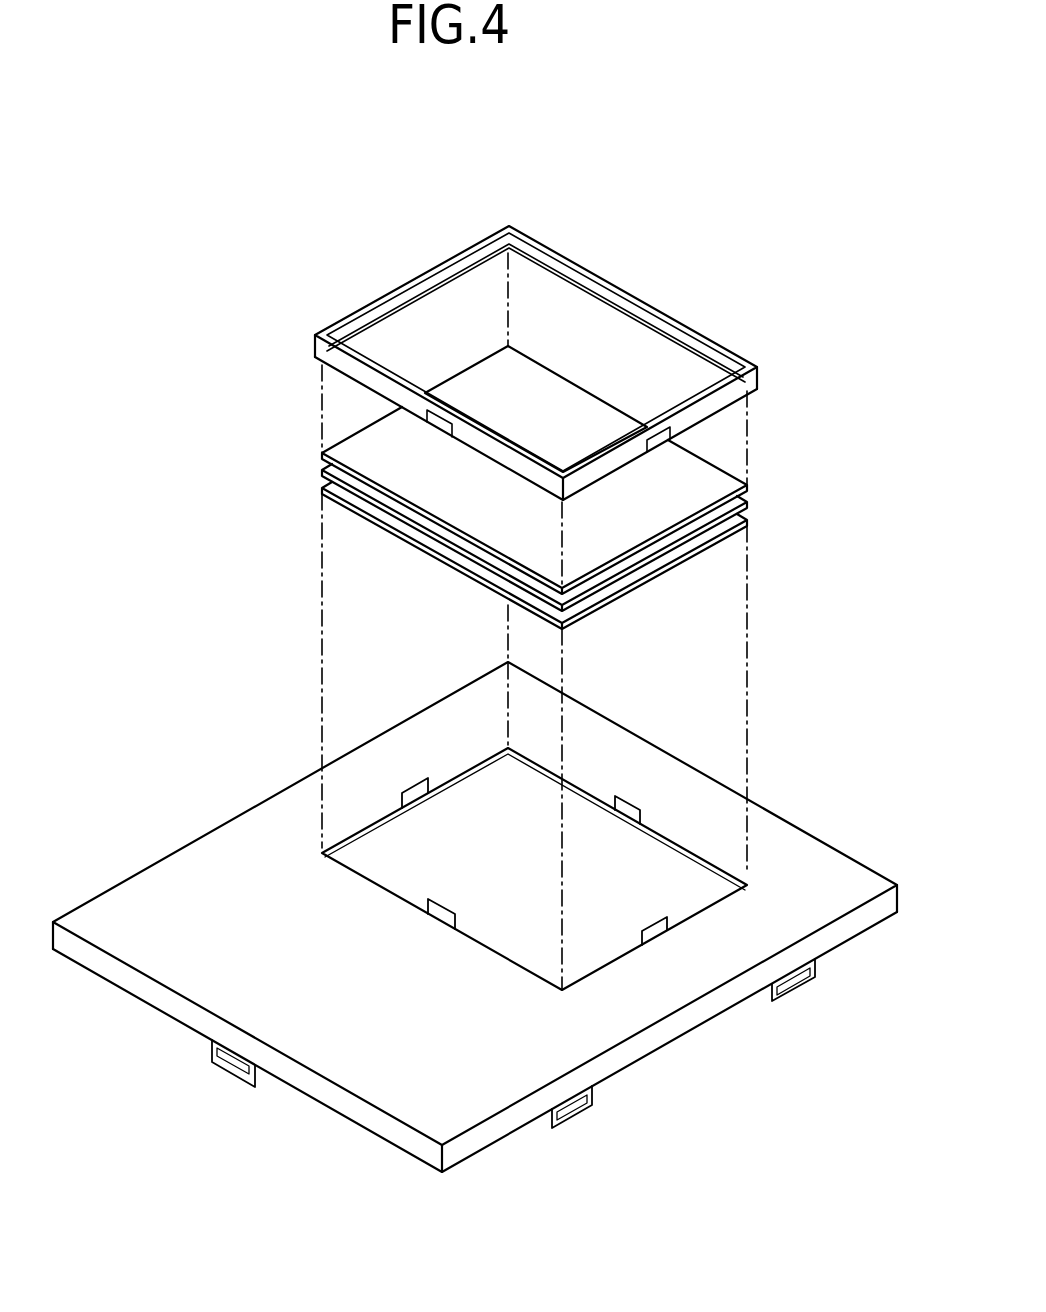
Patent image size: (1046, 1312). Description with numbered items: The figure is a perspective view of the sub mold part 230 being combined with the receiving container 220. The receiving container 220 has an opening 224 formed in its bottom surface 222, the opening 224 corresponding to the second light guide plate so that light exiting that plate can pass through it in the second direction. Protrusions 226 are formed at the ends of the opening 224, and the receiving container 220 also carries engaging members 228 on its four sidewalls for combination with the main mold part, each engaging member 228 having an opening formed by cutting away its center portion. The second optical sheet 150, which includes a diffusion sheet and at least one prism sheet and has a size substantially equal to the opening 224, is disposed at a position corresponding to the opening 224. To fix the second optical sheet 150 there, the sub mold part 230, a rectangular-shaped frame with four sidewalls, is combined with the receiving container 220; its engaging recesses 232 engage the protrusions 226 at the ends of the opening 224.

The second optical sheet 150 is at (752, 475).
The receiving container 220 is at (478, 952).
The bottom surface 222 is at (207, 907).
The opening 224 is at (602, 920).
The protrusions 226 is at (628, 797).
The engaging members 228 is at (573, 1118).
The sub mold part 230 is at (563, 363).
The engaging recesses 232 is at (666, 447).